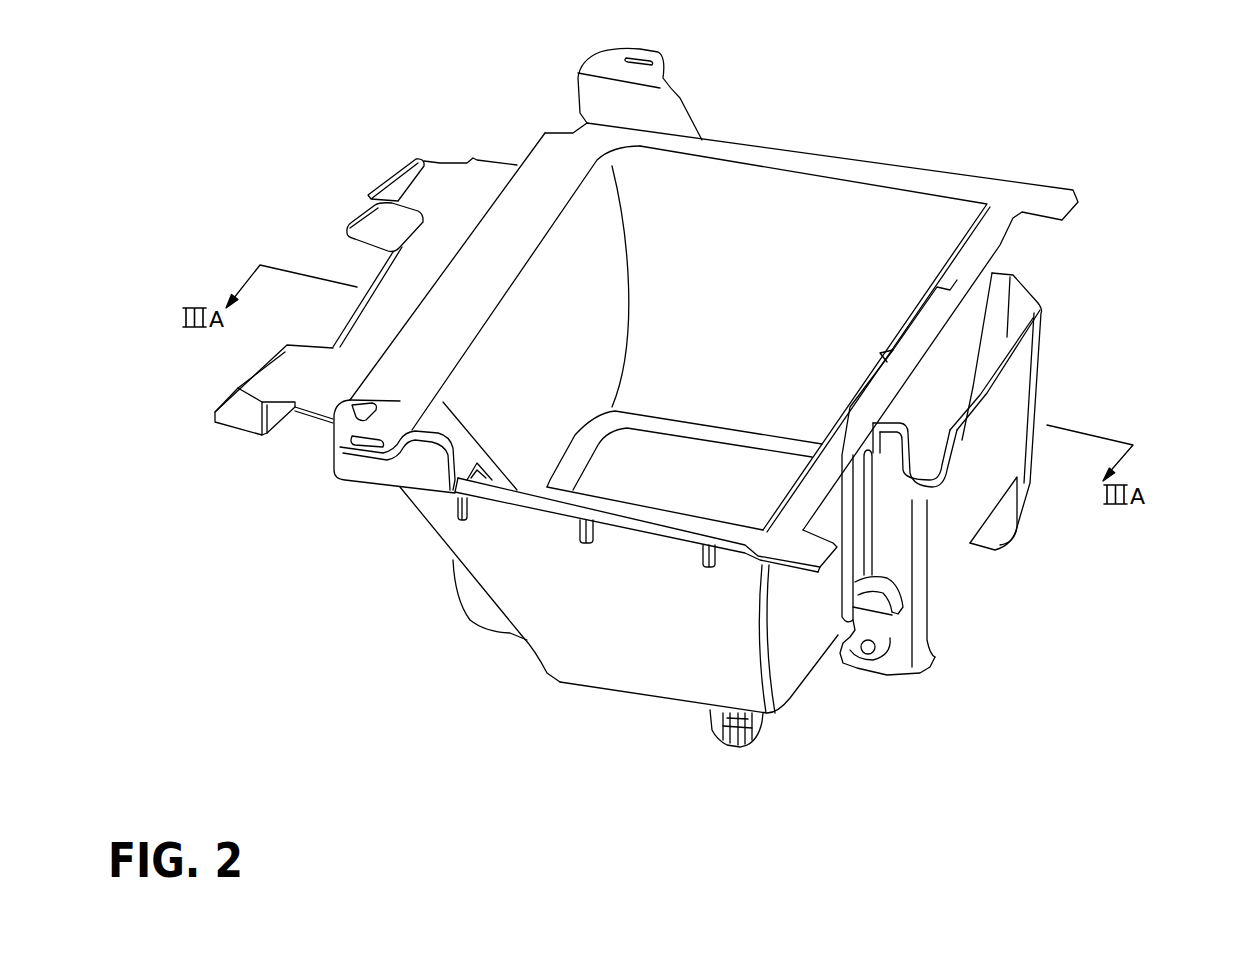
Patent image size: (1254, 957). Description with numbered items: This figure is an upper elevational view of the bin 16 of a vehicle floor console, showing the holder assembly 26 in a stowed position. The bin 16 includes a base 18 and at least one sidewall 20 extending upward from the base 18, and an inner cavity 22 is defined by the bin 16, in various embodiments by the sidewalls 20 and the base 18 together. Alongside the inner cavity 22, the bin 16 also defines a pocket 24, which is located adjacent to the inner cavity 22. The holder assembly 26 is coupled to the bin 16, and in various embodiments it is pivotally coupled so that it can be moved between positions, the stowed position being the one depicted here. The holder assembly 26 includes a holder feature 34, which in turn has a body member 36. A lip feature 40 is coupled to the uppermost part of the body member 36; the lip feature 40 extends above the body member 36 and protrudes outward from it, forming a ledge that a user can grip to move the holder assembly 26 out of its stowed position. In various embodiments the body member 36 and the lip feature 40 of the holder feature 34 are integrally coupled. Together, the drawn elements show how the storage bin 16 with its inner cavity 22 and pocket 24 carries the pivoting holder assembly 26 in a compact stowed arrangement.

The bin 16 is at (1078, 289).
The base 18 is at (670, 488).
The sidewall 20 is at (866, 268).
The inner cavity 22 is at (747, 266).
The pocket 24 is at (997, 345).
The holder assembly 26 is at (932, 444).
The holder feature 34 is at (940, 397).
The body member 36 is at (940, 348).
The lip feature 40 is at (903, 310).